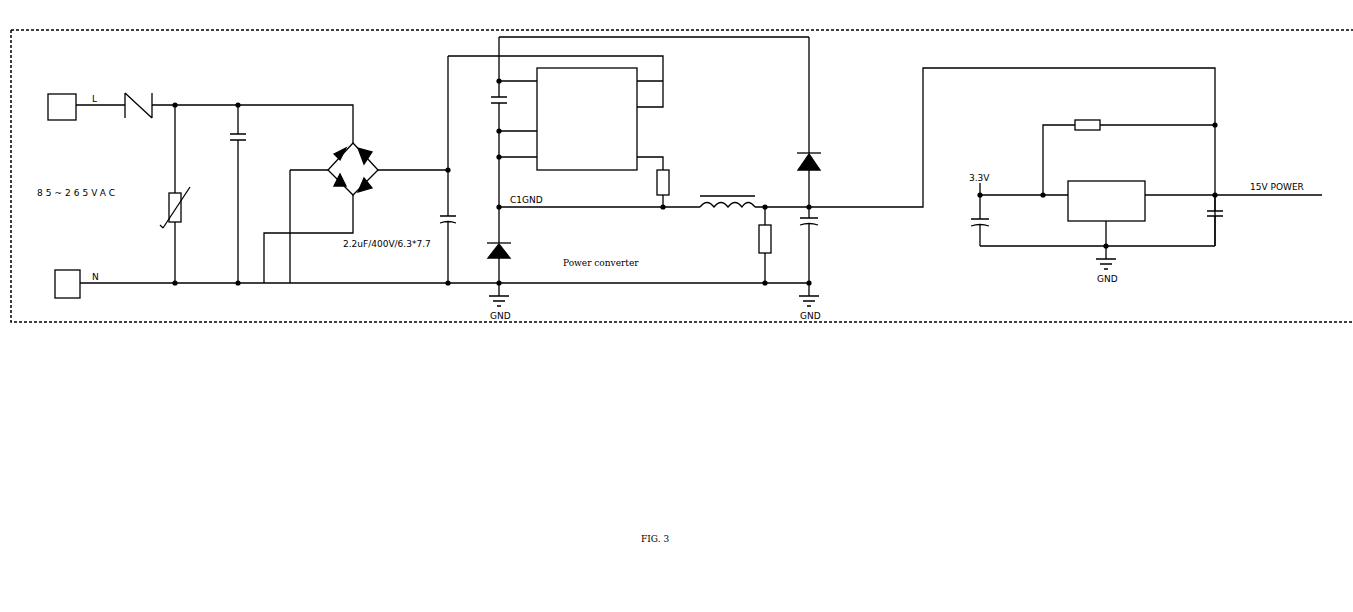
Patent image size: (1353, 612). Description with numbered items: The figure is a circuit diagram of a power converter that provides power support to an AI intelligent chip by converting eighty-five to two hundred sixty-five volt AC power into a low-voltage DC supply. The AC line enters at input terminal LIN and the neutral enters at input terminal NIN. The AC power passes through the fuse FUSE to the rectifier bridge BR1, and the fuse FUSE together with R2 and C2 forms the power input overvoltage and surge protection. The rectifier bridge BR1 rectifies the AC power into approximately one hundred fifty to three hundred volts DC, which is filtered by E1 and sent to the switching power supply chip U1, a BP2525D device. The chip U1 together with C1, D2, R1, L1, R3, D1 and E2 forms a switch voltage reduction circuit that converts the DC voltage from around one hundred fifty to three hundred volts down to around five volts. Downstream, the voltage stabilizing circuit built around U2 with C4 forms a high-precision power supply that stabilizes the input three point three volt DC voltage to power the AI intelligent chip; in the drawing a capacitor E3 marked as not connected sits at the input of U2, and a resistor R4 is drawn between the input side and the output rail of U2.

The line input terminal LIN is at (61, 107).
The neutral input terminal NIN is at (67, 284).
The fuse FUSE is at (134, 106).
The resistor R2 is at (186, 194).
The capacitor C2 is at (269, 194).
The rectifier bridge BR1 is at (356, 208).
The filter capacitor E1 is at (454, 169).
The capacitor C1 is at (488, 104).
The switching power supply chip U1 is at (581, 118).
The resistor R1 is at (641, 188).
The inductor L1 is at (727, 203).
The resistor R3 is at (776, 245).
The diode D1 is at (835, 166).
The capacitor E2 is at (835, 224).
The diode D2 is at (510, 245).
The electrolytic capacitor (NC) E3 is at (987, 225).
The resistor 0R R4 is at (1145, 125).
The voltage stabilizing circuit U2 is at (1134, 204).
The capacitor C4 is at (1225, 220).